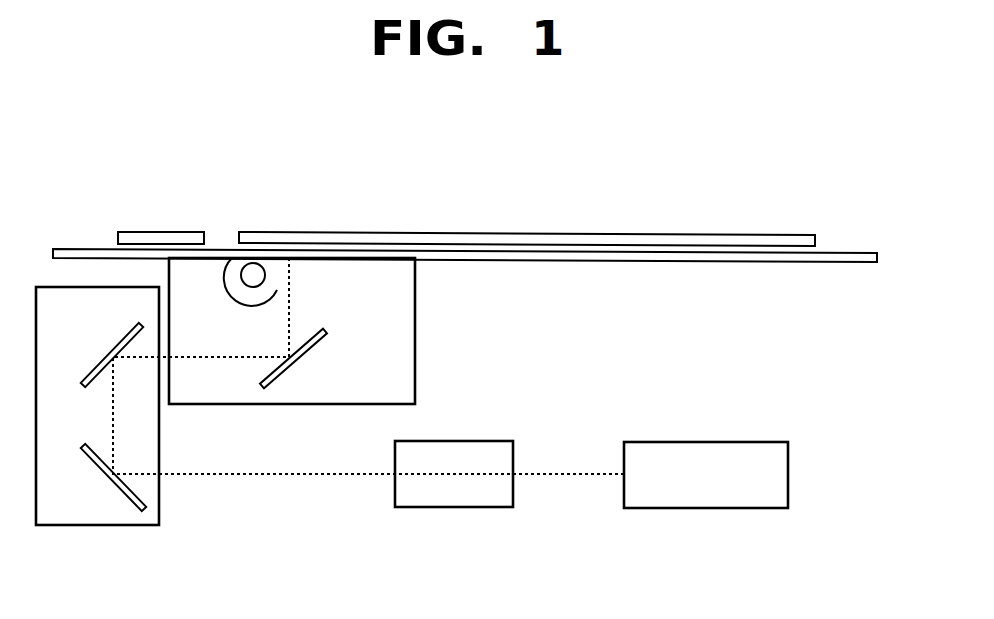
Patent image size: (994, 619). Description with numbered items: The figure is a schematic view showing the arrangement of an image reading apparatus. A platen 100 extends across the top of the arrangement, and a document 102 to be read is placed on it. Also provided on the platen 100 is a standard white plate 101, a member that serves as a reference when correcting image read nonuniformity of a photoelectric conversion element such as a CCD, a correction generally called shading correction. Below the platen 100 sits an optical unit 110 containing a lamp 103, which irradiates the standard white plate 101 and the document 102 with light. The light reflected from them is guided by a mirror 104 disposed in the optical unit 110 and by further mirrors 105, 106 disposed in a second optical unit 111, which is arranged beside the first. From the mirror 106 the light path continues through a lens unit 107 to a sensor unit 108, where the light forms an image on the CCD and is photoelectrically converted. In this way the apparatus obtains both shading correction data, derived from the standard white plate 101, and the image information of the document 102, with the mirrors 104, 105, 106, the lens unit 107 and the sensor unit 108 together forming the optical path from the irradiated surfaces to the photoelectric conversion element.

The platen 100 is at (857, 253).
The standard white plate 101 is at (173, 232).
The document 102 is at (748, 234).
The lamp 103 is at (242, 289).
The mirror 104 is at (310, 350).
The mirror 105 is at (104, 357).
The mirror 106 is at (100, 470).
The lens unit 107 is at (486, 441).
The sensor unit 108 is at (758, 442).
The optical unit 110 is at (415, 310).
The optical unit 111 is at (112, 525).